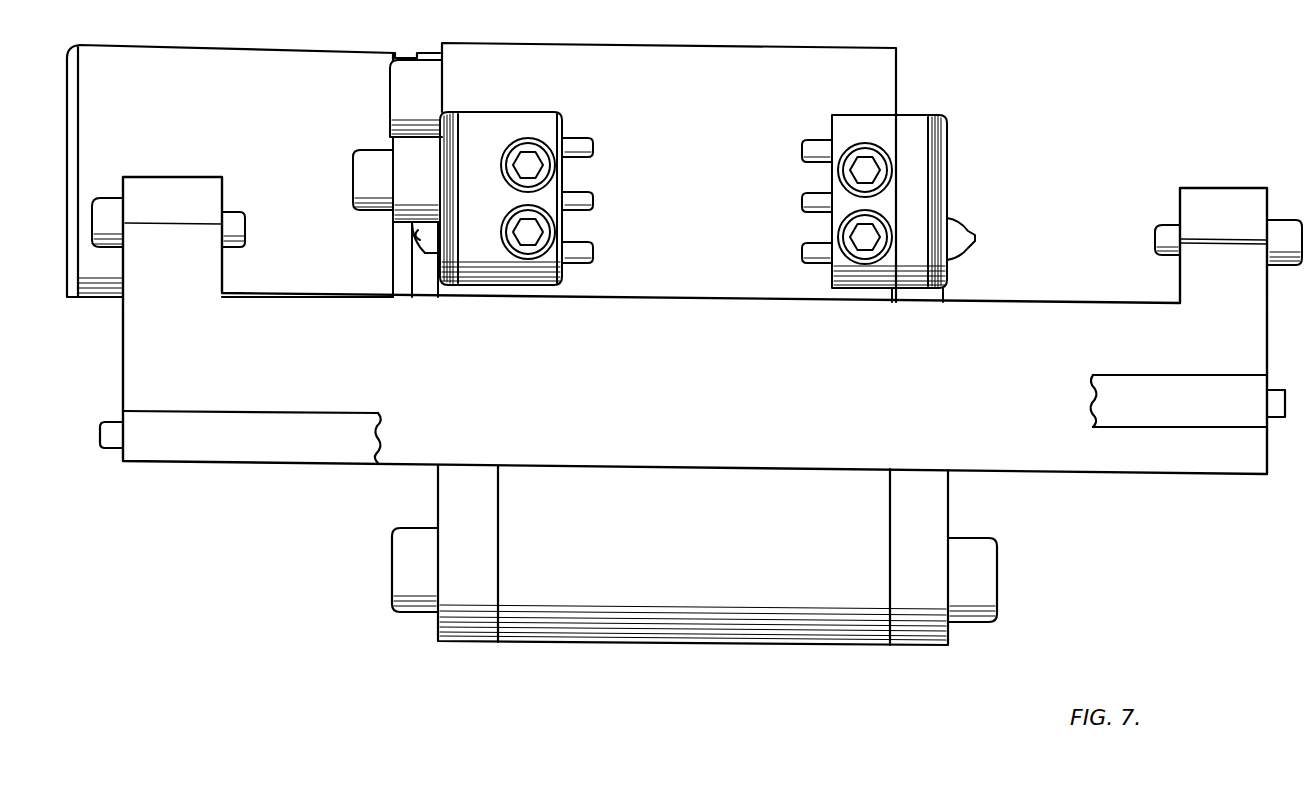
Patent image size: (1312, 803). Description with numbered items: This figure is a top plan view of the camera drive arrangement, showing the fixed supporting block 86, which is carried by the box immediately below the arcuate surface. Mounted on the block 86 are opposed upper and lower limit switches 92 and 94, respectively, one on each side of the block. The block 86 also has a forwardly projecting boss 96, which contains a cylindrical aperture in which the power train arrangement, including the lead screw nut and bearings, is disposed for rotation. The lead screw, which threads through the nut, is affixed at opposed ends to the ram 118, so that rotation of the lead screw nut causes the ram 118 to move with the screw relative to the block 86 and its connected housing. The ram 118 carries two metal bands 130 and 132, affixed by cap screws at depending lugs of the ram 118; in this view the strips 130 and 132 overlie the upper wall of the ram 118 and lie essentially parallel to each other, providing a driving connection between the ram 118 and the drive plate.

The supporting block 86 is at (664, 164).
The upper limit switch 92 is at (490, 152).
The lower limit switch 94 is at (915, 147).
The forwardly projecting boss 96 is at (710, 551).
The ram 118 is at (760, 399).
The metal band 130 is at (247, 445).
The metal band 132 is at (1177, 413).